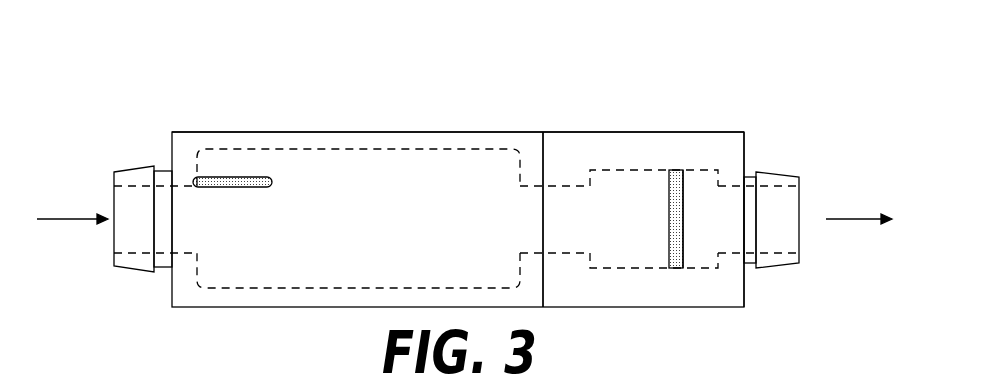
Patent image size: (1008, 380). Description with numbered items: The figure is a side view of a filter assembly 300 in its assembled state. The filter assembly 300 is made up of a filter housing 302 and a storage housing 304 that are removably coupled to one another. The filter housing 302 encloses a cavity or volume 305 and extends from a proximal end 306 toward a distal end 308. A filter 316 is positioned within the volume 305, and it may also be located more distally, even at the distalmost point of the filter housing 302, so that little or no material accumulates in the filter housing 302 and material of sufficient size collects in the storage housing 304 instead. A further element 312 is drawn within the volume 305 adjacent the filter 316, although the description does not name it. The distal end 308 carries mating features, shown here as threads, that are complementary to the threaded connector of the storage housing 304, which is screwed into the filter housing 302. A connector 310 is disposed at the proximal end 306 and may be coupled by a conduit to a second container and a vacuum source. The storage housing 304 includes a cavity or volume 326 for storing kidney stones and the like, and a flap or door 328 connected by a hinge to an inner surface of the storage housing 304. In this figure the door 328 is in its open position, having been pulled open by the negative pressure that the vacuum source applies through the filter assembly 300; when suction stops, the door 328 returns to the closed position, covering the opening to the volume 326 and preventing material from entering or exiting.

The filter assembly 300 is at (103, 73).
The filter housing 302 is at (585, 132).
The storage housing 304 is at (263, 132).
The volume 305 is at (638, 217).
The proximal end 306 is at (788, 100).
The distal end 308 is at (548, 102).
The connector 310 is at (786, 268).
The filter element 312 is at (698, 196).
The filter 316 is at (683, 232).
The volume 326 is at (357, 178).
The door 328 is at (212, 177).